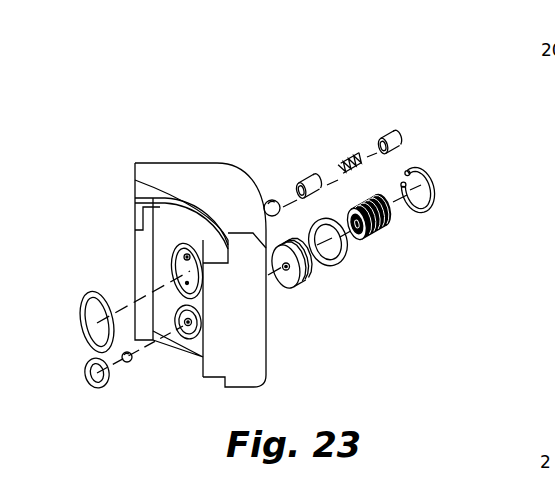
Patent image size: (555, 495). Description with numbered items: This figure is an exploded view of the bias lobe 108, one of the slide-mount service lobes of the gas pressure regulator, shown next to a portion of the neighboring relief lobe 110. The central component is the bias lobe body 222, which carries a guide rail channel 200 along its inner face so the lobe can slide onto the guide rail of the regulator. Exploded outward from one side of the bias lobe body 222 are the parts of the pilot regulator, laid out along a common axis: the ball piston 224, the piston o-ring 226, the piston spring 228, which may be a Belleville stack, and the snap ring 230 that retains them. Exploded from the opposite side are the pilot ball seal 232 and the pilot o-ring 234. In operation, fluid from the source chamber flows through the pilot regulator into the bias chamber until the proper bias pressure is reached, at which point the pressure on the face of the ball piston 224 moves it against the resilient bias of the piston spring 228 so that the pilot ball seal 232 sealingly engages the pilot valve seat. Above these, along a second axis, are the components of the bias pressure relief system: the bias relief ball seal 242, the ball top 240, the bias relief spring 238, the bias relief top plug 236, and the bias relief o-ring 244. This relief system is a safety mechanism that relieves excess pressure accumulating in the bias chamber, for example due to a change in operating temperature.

The bias lobe 108 is at (172, 90).
The relief lobe 110 is at (552, 388).
The guide rail channel 200 is at (200, 238).
The bias lobe body 222 is at (260, 355).
The ball piston 224 is at (310, 281).
The piston o-ring 226 is at (347, 257).
The piston spring 228 is at (382, 238).
The snap ring 230 is at (435, 193).
The pilot ball seal 232 is at (129, 363).
The pilot o-ring 234 is at (84, 368).
The bias relief top plug 236 is at (383, 131).
The bias relief spring 238 is at (349, 152).
The ball top 240 is at (303, 180).
The bias relief ball seal 242 is at (273, 200).
The bias relief o-ring 244 is at (96, 292).